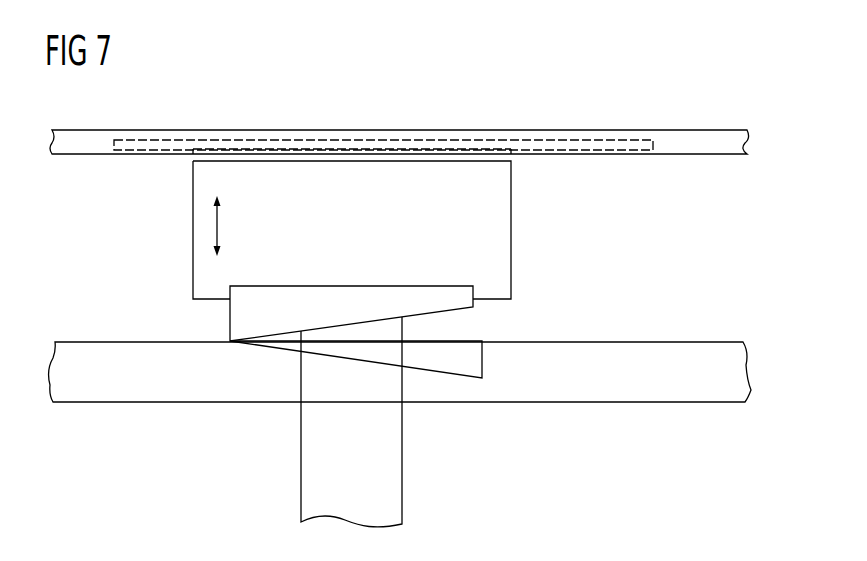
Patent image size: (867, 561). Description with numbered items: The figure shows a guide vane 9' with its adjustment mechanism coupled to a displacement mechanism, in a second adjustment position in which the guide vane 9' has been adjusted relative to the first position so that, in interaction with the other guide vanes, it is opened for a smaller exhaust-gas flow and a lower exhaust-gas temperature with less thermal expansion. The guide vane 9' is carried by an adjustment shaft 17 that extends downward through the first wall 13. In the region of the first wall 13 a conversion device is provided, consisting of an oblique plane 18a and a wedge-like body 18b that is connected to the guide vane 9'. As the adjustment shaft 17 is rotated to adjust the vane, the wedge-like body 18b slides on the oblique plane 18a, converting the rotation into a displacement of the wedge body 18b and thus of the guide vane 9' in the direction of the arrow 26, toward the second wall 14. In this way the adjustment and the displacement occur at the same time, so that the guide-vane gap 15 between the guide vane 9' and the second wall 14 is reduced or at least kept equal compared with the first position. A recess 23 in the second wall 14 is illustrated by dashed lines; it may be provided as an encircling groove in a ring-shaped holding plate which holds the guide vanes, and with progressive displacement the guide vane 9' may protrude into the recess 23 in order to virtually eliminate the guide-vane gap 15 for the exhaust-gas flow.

The second wall 14 is at (705, 145).
The recess 23 is at (607, 148).
The guide-vane gap 15 is at (192, 158).
The guide vane 9' is at (380, 230).
The arrow 26 is at (218, 225).
The oblique plane 18a is at (322, 353).
The wedge-like body 18b is at (413, 302).
The first wall 13 is at (704, 358).
The adjustment shaft 17 is at (392, 468).